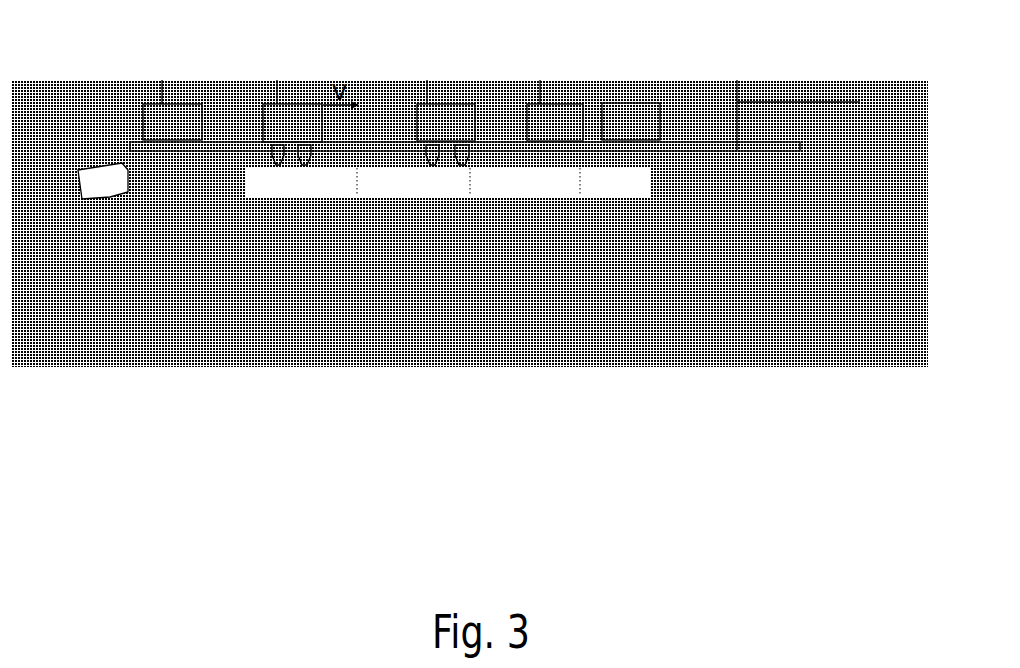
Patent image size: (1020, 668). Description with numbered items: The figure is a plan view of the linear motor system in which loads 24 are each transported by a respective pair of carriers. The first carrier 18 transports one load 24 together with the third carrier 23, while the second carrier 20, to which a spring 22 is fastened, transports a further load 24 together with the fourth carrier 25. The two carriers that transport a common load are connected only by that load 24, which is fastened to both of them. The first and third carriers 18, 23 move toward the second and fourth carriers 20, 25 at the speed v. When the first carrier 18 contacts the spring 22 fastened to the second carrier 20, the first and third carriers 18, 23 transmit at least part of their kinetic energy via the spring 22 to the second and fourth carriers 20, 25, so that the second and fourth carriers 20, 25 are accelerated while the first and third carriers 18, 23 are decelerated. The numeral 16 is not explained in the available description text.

The track segment plate 16 is at (108, 182).
The first carrier 18 is at (303, 160).
The second carrier 20 is at (433, 158).
The spring 22 is at (236, 130).
The third carrier 23 is at (277, 160).
The load 24 is at (307, 115).
The fourth carrier 25 is at (462, 160).